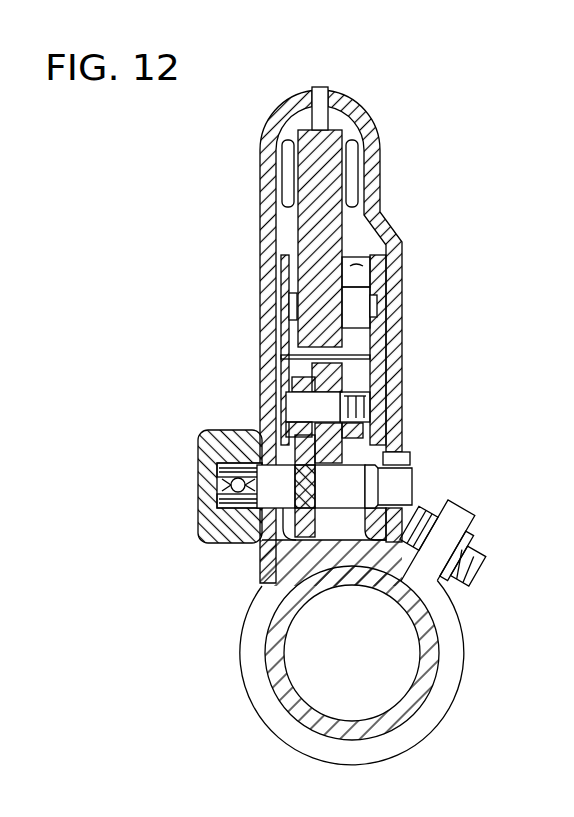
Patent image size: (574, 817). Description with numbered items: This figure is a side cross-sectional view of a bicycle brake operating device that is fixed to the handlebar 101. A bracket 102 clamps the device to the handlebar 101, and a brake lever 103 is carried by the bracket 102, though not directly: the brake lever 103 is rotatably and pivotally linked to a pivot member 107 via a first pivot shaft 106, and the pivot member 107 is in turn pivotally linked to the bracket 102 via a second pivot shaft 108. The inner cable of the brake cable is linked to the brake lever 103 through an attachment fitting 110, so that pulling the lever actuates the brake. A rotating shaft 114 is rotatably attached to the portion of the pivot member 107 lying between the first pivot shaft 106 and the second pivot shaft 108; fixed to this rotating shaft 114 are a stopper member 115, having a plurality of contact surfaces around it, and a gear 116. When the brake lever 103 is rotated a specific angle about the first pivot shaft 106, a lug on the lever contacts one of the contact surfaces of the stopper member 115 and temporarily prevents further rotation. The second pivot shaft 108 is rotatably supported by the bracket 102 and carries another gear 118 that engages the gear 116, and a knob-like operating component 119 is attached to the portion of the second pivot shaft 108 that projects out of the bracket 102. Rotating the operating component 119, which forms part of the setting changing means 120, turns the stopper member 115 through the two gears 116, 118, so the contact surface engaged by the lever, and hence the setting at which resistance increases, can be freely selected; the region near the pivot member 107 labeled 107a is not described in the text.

The handlebar 101 is at (430, 642).
The bracket 102 is at (258, 172).
The brake lever 103 is at (352, 225).
The first pivot shaft 106 is at (289, 306).
The pivot member 107 is at (283, 272).
The sleeve end 107a is at (372, 250).
The second pivot shaft 108 is at (395, 487).
The attachment fitting 110 is at (357, 150).
The rotating shaft 114 is at (300, 408).
The stopper member 115 is at (340, 373).
The gear 116 is at (290, 372).
The gear 118 is at (265, 562).
The operating component 119 is at (205, 455).
The setting changing means 120 is at (190, 518).